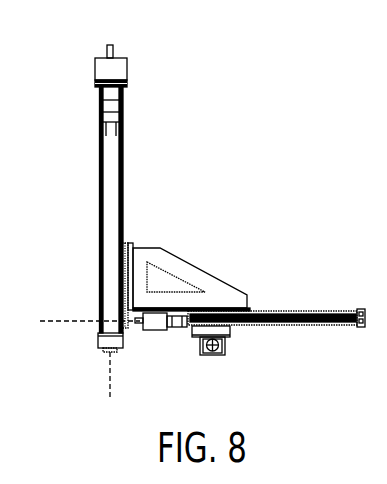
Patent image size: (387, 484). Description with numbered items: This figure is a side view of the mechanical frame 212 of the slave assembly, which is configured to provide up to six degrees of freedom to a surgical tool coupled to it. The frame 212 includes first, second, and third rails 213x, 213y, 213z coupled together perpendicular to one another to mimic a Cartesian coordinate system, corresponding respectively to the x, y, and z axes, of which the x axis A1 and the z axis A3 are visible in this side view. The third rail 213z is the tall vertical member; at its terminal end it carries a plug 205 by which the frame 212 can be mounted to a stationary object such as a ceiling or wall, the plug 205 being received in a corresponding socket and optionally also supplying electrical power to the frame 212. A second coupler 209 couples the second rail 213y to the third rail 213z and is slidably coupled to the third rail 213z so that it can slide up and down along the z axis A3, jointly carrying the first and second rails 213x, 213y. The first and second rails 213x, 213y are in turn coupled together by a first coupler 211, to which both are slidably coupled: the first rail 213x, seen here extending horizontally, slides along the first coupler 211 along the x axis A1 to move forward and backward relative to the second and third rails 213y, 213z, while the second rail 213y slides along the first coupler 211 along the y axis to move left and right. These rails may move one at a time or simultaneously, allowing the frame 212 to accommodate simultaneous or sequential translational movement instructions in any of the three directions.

The plug 205 is at (133, 63).
The second coupler 209 is at (124, 242).
The first coupler 211 is at (229, 328).
The mechanical frame 212 is at (224, 160).
The first rail 213x is at (290, 310).
The second rail 213y is at (202, 345).
The third rail 213z is at (100, 197).
The x axis A1 is at (52, 318).
The z axis A3 is at (102, 377).